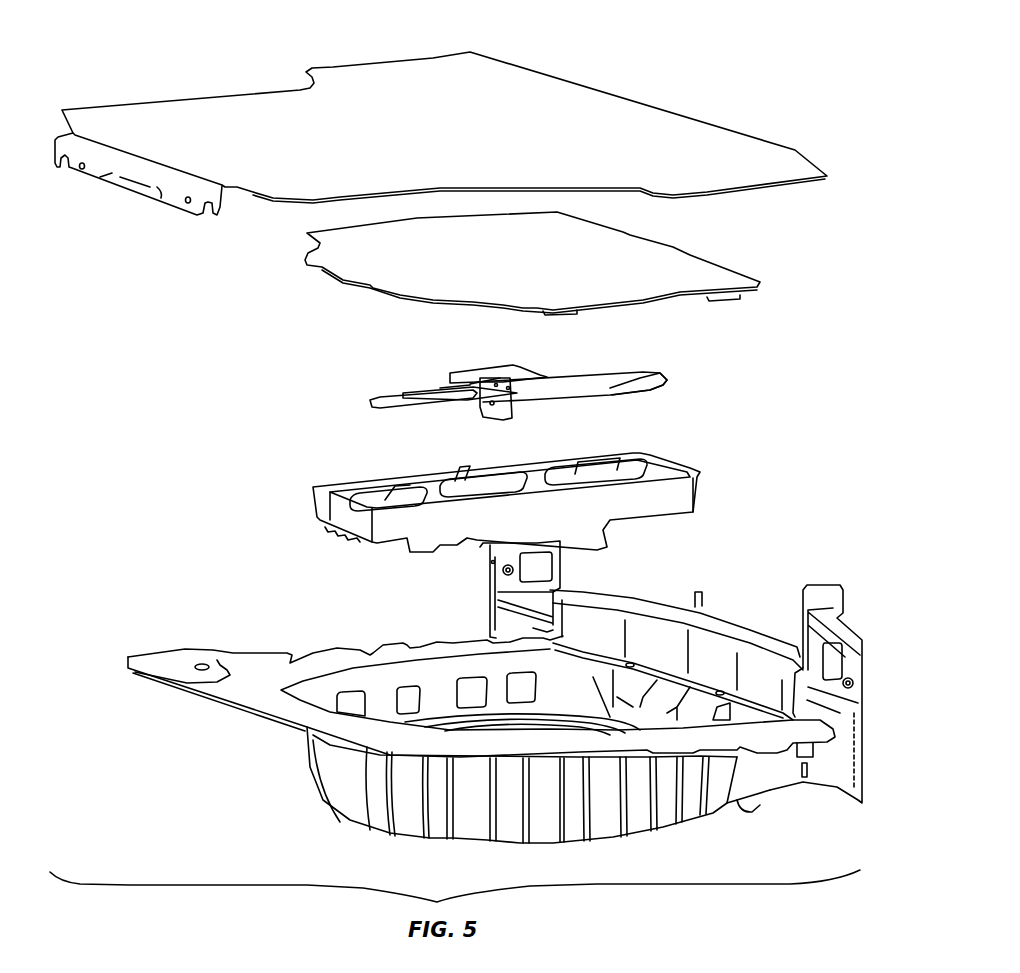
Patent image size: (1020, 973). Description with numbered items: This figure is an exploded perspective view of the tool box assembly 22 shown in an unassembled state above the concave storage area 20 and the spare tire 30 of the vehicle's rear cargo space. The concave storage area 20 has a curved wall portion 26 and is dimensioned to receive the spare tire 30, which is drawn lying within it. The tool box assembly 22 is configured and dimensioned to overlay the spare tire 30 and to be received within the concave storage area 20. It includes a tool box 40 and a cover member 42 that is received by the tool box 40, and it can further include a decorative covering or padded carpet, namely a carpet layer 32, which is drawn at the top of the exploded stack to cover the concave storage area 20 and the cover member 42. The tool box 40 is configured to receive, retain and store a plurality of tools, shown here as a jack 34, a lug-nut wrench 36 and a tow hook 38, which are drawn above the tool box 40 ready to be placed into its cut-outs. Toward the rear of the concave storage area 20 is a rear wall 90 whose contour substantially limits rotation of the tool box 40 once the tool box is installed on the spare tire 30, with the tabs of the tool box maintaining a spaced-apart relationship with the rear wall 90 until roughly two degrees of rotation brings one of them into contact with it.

The concave storage area 20 is at (383, 700).
The tool box assembly 22 is at (164, 470).
The curved wall portion 26 is at (357, 703).
The spare tire 30 is at (583, 715).
The carpet layer 32 is at (680, 133).
The jack 34 is at (547, 376).
The lug-nut wrench 36 is at (653, 393).
The tow hook 38 is at (385, 412).
The tool box 40 is at (700, 484).
The cover member 42 is at (730, 266).
The rear wall 90 is at (712, 647).